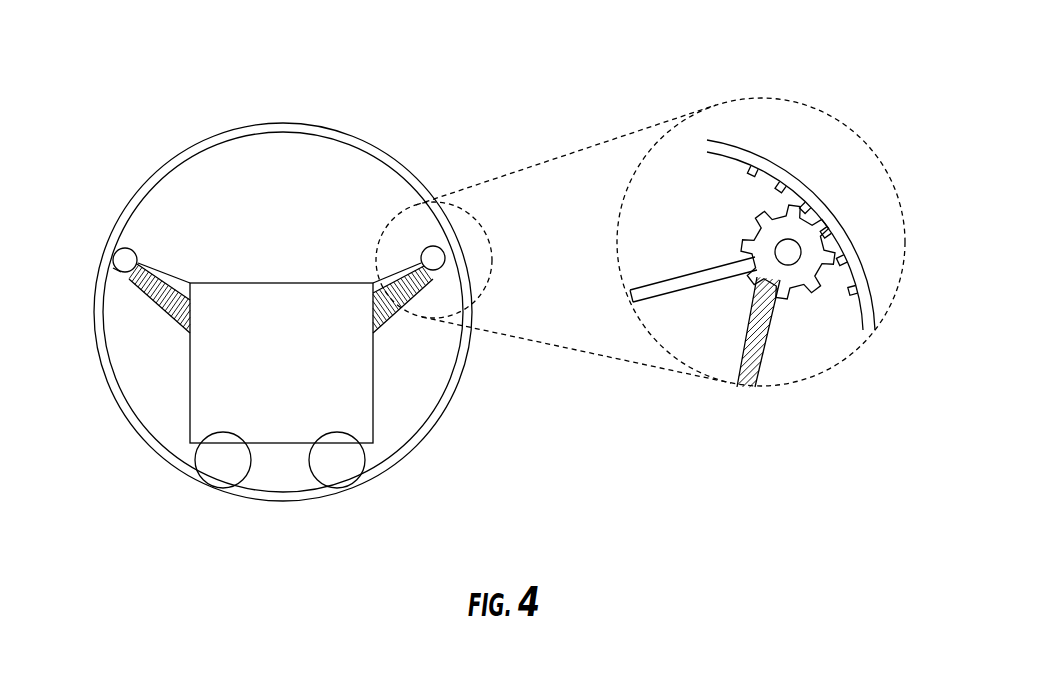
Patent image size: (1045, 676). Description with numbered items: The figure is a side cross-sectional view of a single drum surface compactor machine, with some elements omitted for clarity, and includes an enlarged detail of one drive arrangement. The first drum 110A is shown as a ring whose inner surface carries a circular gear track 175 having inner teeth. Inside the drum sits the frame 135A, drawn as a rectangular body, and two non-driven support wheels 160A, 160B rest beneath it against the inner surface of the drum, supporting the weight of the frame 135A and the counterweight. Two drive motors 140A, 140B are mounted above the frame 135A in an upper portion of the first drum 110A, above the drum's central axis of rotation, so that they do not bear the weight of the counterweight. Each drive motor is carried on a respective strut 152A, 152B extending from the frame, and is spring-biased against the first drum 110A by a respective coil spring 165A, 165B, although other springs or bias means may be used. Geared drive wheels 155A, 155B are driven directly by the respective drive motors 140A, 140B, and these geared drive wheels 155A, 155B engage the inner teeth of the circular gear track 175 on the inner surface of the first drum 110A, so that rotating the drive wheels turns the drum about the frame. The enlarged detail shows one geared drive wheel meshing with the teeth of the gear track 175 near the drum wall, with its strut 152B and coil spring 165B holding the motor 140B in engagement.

The first drum 110A is at (297, 123).
The circular gear track 175 is at (247, 135).
The frame 135A is at (373, 388).
The non-driven support wheel 160A is at (223, 477).
The non-driven support wheel 160B is at (338, 478).
The geared drive wheel 155A is at (115, 252).
The geared drive wheel 155B is at (450, 257).
The drive motor 140A is at (121, 272).
The drive motor 140B is at (455, 262).
The strut 152A is at (168, 263).
The strut 152B is at (403, 265).
The coil spring 165A is at (137, 282).
The coil spring 165B is at (428, 286).